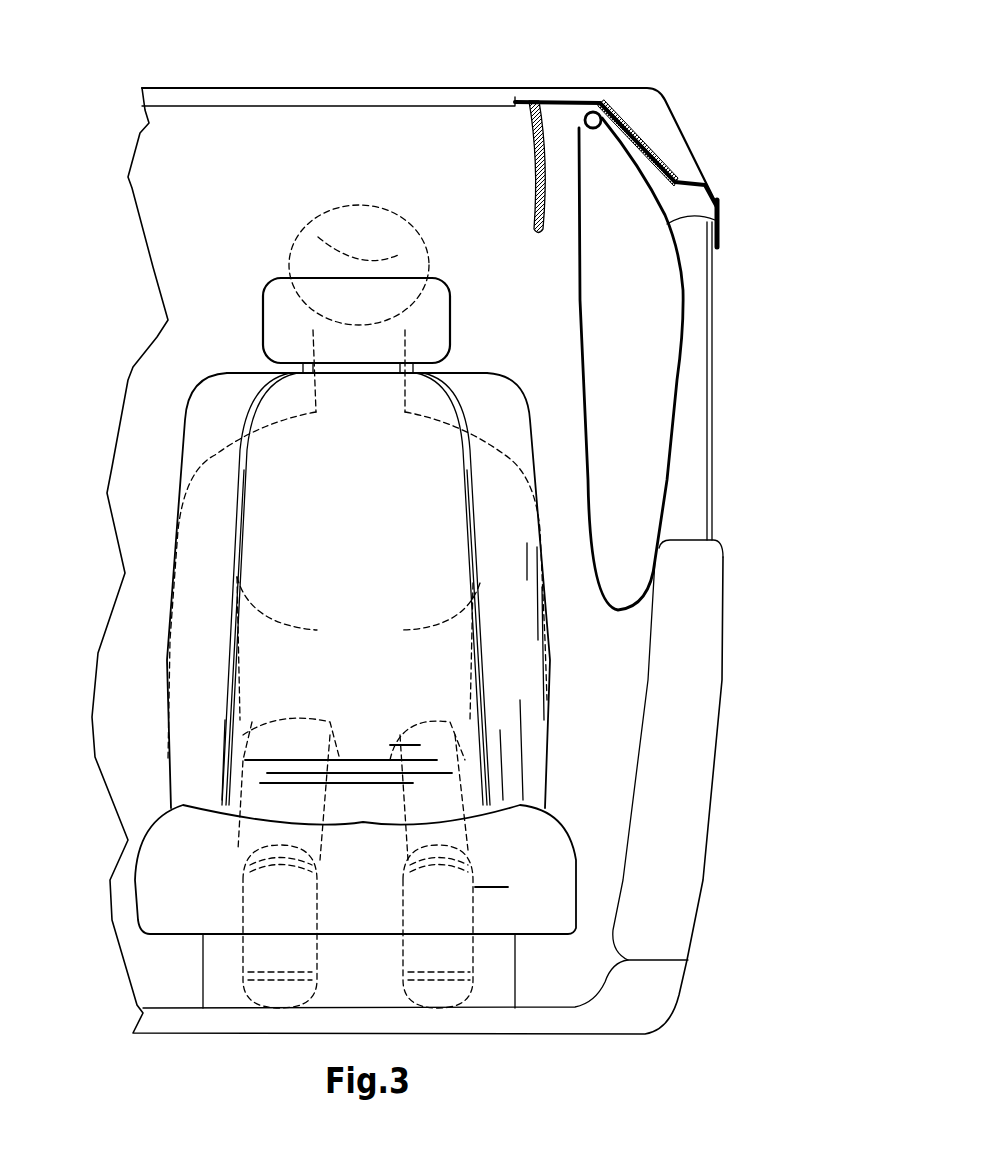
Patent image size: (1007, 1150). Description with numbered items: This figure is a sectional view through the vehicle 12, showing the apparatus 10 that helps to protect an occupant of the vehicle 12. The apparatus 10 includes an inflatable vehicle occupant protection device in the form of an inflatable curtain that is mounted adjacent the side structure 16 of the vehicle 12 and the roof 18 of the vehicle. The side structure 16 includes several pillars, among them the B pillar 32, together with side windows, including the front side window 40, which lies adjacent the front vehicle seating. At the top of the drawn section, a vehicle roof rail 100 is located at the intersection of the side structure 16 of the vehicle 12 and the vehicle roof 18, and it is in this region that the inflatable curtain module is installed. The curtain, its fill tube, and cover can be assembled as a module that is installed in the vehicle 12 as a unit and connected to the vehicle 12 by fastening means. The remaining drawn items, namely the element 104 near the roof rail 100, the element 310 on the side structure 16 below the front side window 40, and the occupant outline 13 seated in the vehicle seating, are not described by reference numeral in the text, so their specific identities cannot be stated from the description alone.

The vehicle 12 is at (228, 62).
The roof 18 is at (369, 98).
The apparatus 10 is at (625, 72).
The vehicle roof rail 100 is at (694, 126).
The tether strap 104 is at (519, 108).
The B pillar 32 is at (712, 222).
The front side window 40 is at (710, 332).
The side structure 16 is at (752, 592).
The armrest 310 is at (635, 650).
The occupant 13 is at (305, 520).